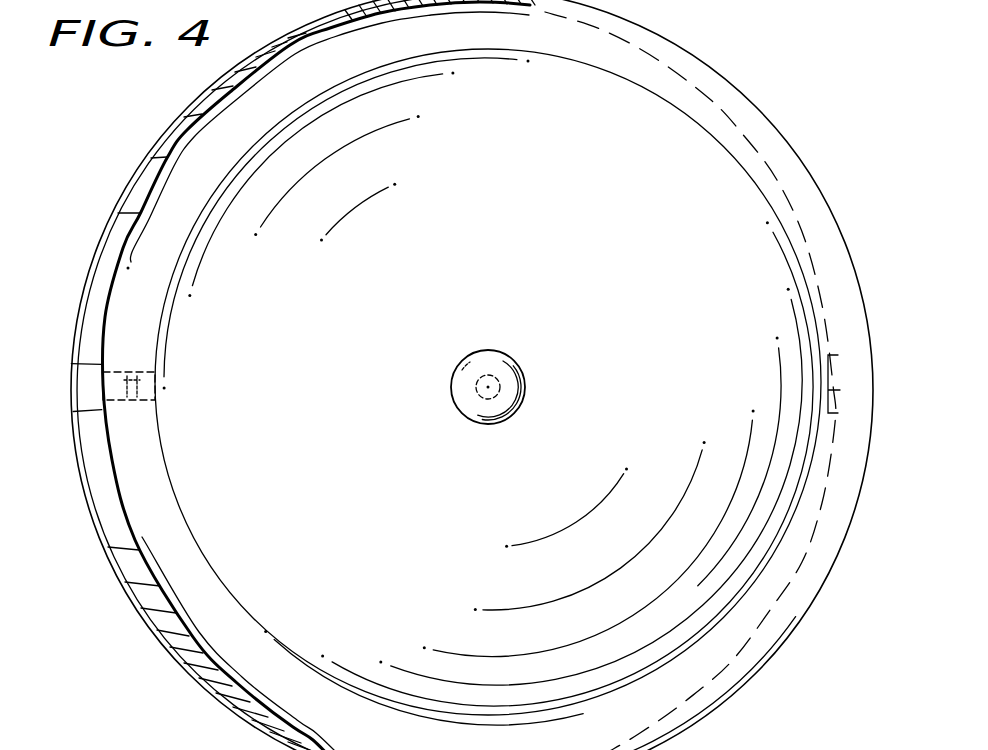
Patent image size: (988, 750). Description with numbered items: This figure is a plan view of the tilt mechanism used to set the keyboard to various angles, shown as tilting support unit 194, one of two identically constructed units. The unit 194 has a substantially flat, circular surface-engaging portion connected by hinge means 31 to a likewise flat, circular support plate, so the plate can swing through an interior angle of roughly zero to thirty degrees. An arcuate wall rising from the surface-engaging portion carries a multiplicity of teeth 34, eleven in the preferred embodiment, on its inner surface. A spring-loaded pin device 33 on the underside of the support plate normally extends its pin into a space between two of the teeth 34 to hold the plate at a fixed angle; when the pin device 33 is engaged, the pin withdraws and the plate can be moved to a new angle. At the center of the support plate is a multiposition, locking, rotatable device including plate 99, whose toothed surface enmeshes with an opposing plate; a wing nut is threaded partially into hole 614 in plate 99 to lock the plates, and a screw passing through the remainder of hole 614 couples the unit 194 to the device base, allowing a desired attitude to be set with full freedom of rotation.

The tilting support unit 194 is at (763, 73).
The teeth 34 is at (73, 381).
The spring-loaded pin device 33 is at (143, 366).
The hinge means 31 is at (840, 390).
The hole 614 is at (500, 385).
The plate 99 is at (484, 407).